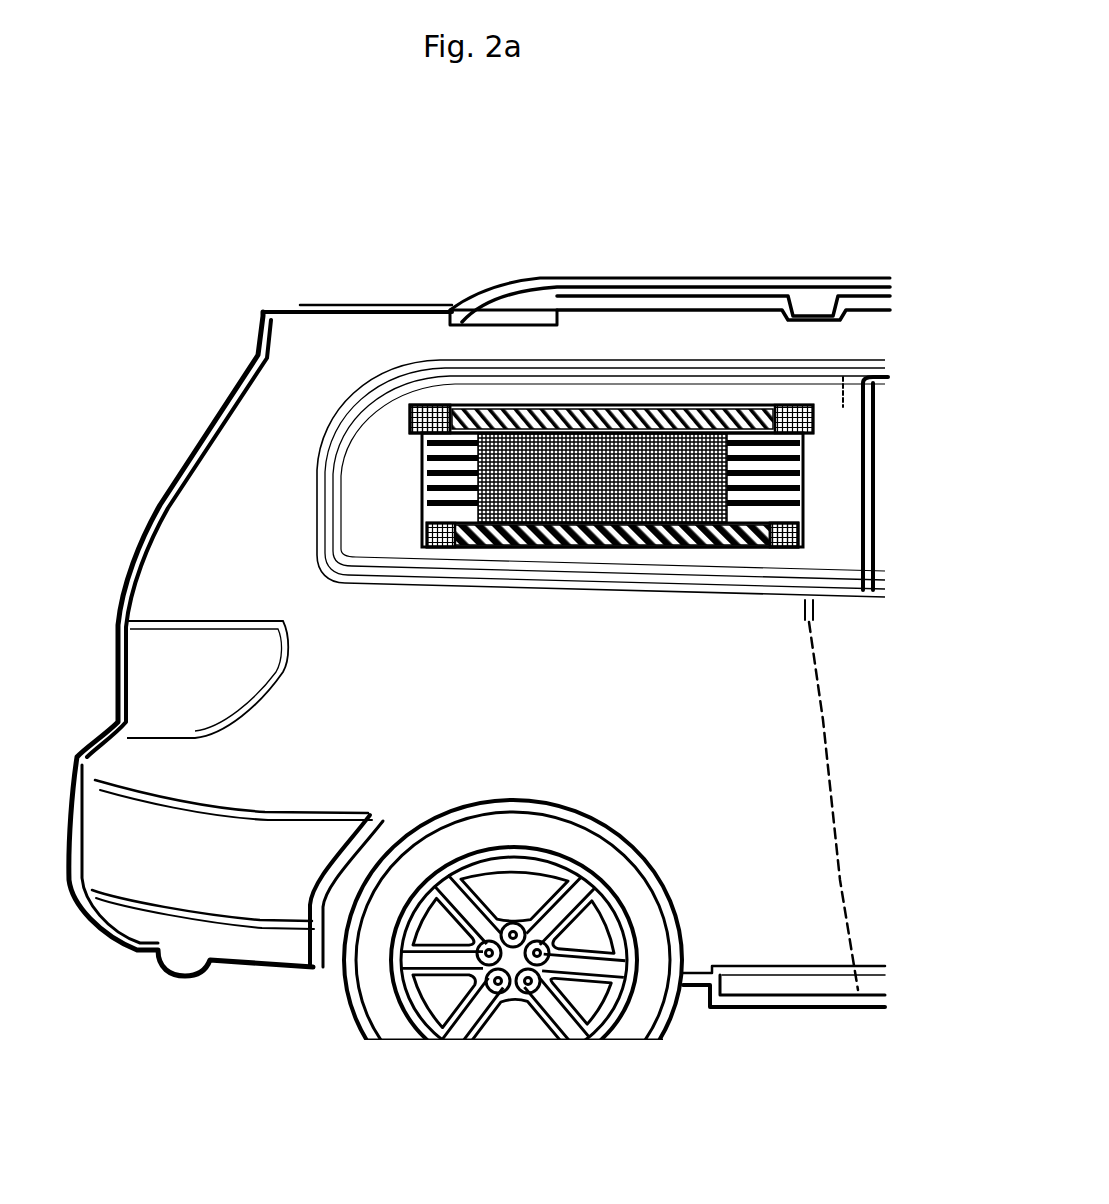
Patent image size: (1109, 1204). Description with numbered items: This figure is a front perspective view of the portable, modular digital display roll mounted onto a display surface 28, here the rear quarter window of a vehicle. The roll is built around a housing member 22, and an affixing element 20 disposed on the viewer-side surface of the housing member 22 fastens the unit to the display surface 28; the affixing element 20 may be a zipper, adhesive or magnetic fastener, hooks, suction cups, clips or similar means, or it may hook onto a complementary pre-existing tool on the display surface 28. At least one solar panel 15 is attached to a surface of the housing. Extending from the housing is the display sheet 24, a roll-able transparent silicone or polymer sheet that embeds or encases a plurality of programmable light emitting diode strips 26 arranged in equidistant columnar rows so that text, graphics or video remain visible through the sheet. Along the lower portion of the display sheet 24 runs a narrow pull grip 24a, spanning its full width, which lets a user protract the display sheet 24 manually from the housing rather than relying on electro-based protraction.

The solar panel 15 is at (587, 405).
The affixing element 20 is at (427, 420).
The housing member 22 is at (447, 405).
The display sheet 24 is at (807, 455).
The pull grip 24a is at (793, 550).
The programmable light emitting diode strips 26 is at (773, 477).
The display surface 28 is at (380, 463).